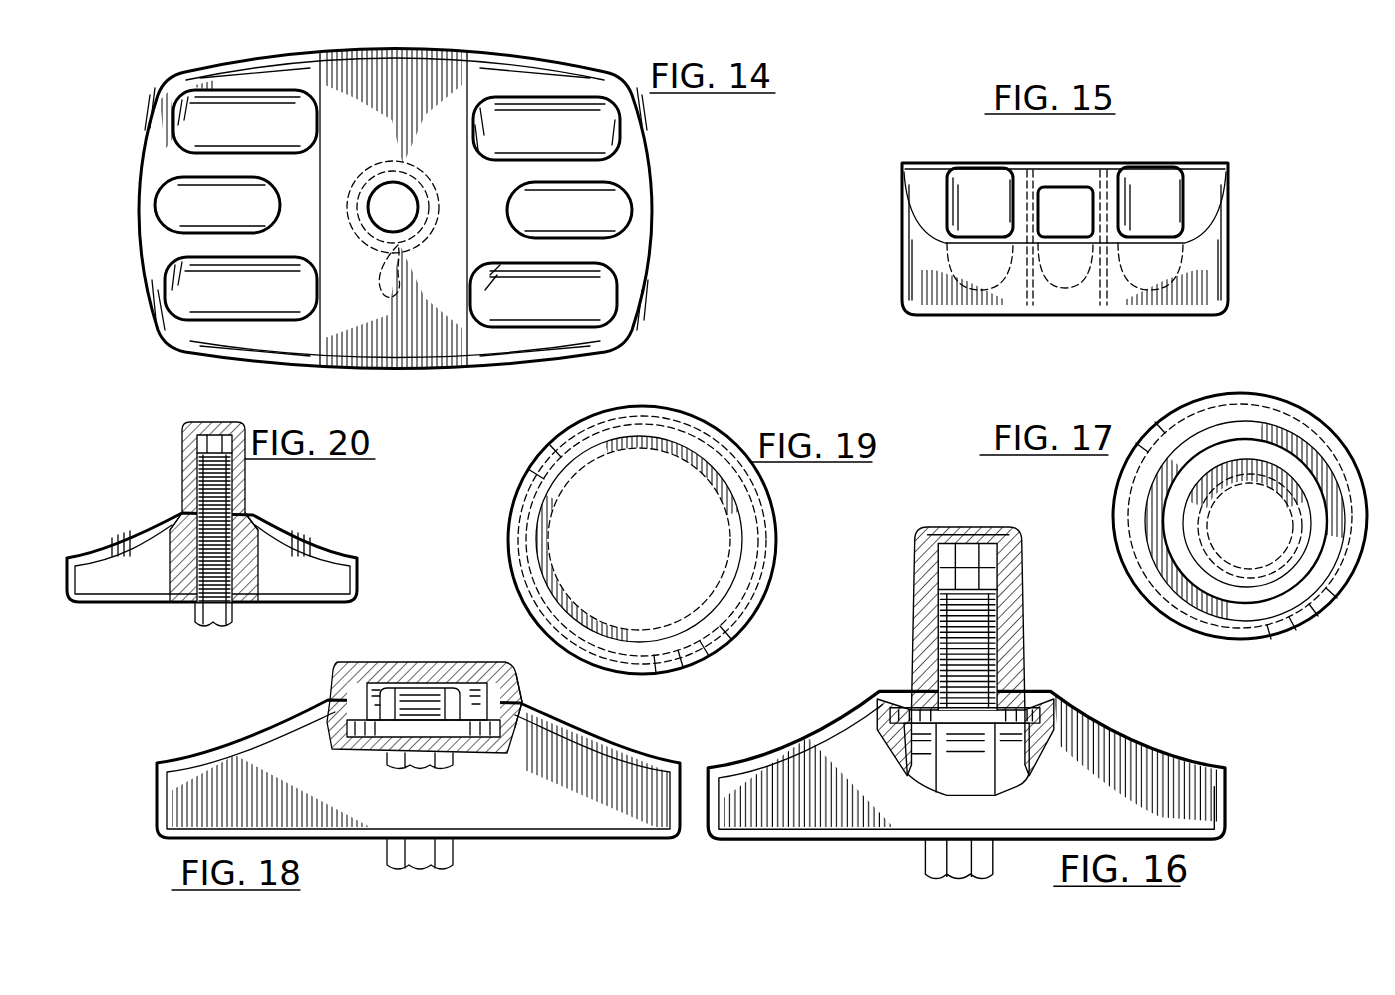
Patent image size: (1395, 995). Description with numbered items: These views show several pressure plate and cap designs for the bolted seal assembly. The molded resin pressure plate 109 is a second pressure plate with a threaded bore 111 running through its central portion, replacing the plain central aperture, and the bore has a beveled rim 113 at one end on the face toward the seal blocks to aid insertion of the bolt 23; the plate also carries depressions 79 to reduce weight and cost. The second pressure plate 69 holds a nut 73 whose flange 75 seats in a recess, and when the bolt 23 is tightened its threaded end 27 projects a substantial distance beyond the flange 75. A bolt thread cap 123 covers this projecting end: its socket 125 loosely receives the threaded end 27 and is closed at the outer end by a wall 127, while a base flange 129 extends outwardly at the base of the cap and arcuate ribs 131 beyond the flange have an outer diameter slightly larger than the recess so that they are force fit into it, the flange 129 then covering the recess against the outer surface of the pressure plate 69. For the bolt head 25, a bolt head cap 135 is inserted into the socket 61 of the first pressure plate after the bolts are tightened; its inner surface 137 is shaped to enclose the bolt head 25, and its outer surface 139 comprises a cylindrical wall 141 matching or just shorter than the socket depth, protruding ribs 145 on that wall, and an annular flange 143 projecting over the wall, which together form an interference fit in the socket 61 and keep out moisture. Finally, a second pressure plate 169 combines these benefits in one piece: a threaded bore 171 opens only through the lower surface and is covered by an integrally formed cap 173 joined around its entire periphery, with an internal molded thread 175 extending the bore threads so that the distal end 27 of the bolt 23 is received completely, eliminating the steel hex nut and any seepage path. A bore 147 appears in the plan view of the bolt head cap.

In FIG. 16, the bolt 23 is at (927, 858).
In FIG. 18, the bolt 23 is at (458, 853).
In FIG. 20, the bolt 23 is at (197, 605).
In FIG. 18, the bolt head 25 is at (422, 702).
In FIG. 16, the threaded end 27 is at (983, 592).
In FIG. 20, the threaded end 27 is at (197, 498).
In FIG. 18, the socket 61 is at (500, 753).
In FIG. 16, the second pressure plate 69 is at (1150, 727).
In FIG. 16, the nut 73 is at (983, 735).
In FIG. 16, the flange 75 is at (887, 678).
In FIG. 14, the depressions 79 is at (205, 290).
In FIG. 15, the depressions 79 is at (985, 195).
In FIG. 14, the pressure plate 109 is at (243, 56).
In FIG. 15, the pressure plate 109 is at (1246, 212).
In FIG. 14, the threaded bore 111 is at (405, 193).
In FIG. 15, the threaded bore 111 is at (1080, 185).
In FIG. 14, the beveled rim 113 is at (397, 265).
In FIG. 15, the beveled rim 113 is at (1038, 300).
In FIG. 17, the bolt thread cap 123 is at (1365, 370).
In FIG. 16, the bolt thread cap 123 is at (897, 605).
In FIG. 17, the socket 125 is at (1257, 530).
In FIG. 16, the socket 125 is at (905, 552).
In FIG. 17, the wall 127 is at (1232, 548).
In FIG. 16, the wall 127 is at (950, 523).
In FIG. 17, the base flange 129 is at (1197, 410).
In FIG. 16, the arcuate ribs 131 is at (1002, 682).
In FIG. 19, the bolt head cap 135 is at (765, 385).
In FIG. 18, the bolt head cap 135 is at (405, 652).
In FIG. 19, the inner surface 137 is at (577, 483).
In FIG. 18, the inner surface 137 is at (367, 662).
In FIG. 19, the outer surface 139 is at (525, 488).
In FIG. 18, the outer surface 139 is at (503, 688).
In FIG. 18, the cylindrical wall 141 is at (515, 716).
In FIG. 18, the flange 143 is at (512, 690).
In FIG. 18, the ribs 145 is at (333, 718).
In FIG. 19, the bore 147 is at (675, 555).
In FIG. 20, the second pressure plate 169 is at (297, 547).
In FIG. 20, the threaded bore 171 is at (245, 560).
In FIG. 20, the integral cap 173 is at (228, 493).
In FIG. 20, the internal molded thread 175 is at (217, 433).